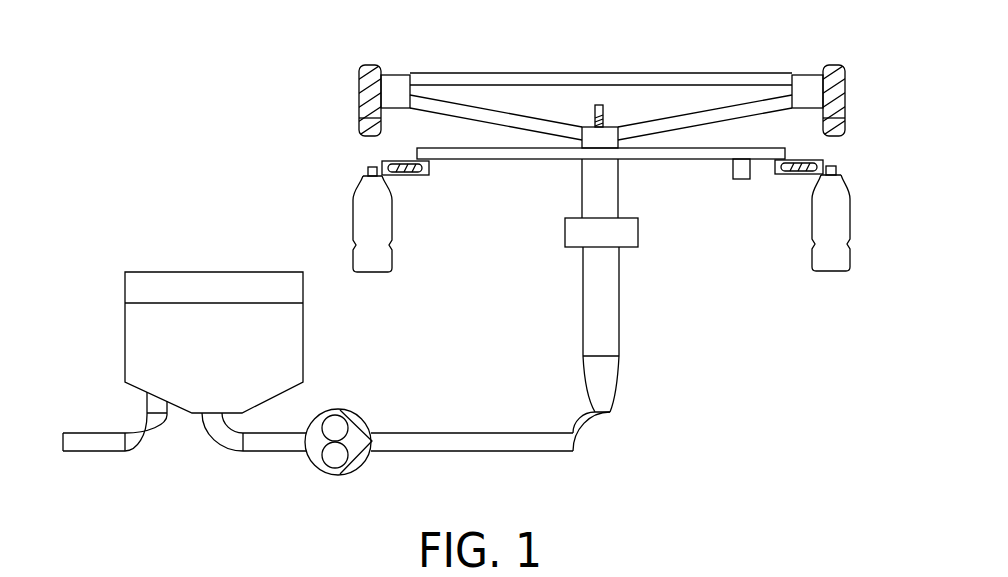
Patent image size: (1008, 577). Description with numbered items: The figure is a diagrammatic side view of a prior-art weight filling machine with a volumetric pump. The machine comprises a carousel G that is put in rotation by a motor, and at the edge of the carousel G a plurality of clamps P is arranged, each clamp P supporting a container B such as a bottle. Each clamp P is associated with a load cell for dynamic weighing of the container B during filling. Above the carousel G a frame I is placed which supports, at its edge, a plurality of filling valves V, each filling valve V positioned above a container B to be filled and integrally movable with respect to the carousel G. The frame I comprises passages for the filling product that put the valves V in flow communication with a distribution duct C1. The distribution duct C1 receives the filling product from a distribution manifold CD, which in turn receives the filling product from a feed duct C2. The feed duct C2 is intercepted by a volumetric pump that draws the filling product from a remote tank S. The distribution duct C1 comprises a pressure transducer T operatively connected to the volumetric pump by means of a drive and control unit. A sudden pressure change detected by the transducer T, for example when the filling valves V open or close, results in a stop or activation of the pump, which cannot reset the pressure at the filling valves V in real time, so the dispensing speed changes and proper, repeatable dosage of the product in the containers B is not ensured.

The frame I is at (686, 75).
The filling valves V is at (360, 92).
The pressure transducer T is at (603, 108).
The carousel G is at (697, 162).
The clamps P is at (410, 178).
The container B is at (355, 212).
The distribution duct C1 is at (582, 195).
The distribution manifold CD is at (567, 240).
The feed duct C2 is at (620, 325).
The remote tank S is at (128, 352).